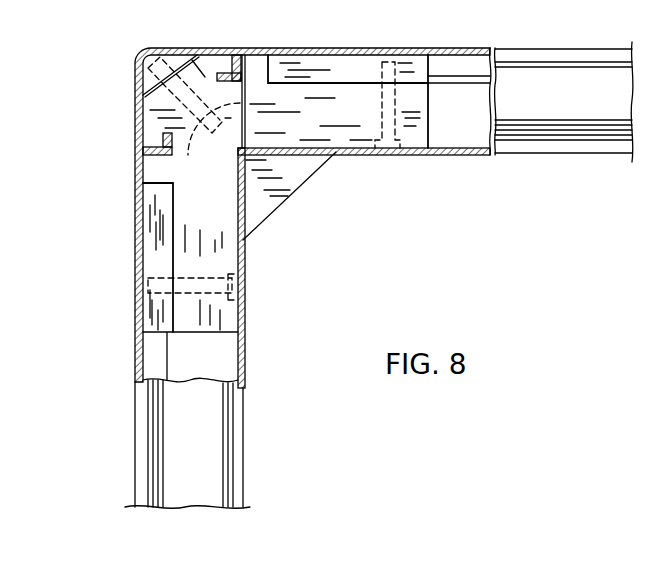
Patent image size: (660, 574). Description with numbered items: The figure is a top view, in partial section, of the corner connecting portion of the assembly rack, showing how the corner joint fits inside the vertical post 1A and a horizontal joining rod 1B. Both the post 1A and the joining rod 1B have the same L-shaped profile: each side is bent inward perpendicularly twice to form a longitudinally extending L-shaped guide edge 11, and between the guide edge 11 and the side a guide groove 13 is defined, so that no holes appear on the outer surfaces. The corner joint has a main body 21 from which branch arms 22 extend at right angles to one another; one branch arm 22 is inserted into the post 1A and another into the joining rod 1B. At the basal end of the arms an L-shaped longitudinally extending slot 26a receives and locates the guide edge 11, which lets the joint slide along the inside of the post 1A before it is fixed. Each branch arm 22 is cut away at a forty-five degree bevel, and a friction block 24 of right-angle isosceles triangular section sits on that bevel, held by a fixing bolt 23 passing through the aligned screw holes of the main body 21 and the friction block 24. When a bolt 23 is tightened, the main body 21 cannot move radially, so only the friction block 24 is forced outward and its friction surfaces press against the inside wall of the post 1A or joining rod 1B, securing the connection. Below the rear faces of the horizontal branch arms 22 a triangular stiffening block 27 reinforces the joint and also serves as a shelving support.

The guide edge 11 is at (222, 64).
The guide groove 13 is at (456, 67).
The main body 21 is at (180, 47).
The branch arm 22 is at (218, 250).
The fixing bolt 23 is at (243, 121).
The friction block 24 is at (305, 65).
The L-shaped longitudinally extending slot 26a is at (245, 60).
The triangular stiffening block 27 is at (288, 172).
The post 1A is at (193, 50).
The joining rod 1B is at (370, 48).